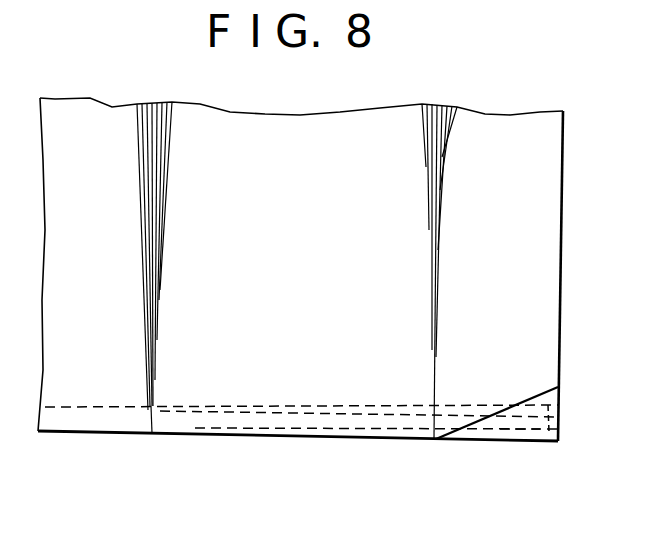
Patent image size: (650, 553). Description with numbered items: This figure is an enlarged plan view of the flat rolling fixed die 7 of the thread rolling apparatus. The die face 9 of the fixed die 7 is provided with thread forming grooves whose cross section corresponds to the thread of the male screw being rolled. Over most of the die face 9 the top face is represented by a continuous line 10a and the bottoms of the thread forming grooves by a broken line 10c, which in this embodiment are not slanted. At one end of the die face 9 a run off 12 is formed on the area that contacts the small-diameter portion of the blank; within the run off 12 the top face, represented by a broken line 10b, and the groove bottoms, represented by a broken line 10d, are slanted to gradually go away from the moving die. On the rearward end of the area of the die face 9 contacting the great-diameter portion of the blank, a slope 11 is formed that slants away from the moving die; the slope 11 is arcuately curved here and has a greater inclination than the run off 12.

The flat rolling fixed die 7 is at (163, 99).
The die face 9 is at (79, 433).
The continuous line representing top face of die face 10a is at (186, 433).
The line representing top face of die face in run off 10b is at (392, 436).
The broken line representing bottoms of thread forming grooves outside run off 10c is at (330, 414).
The broken line representing bottoms of thread forming grooves in run off 10d is at (549, 432).
The slope 11 is at (485, 431).
The run off 12 is at (510, 429).